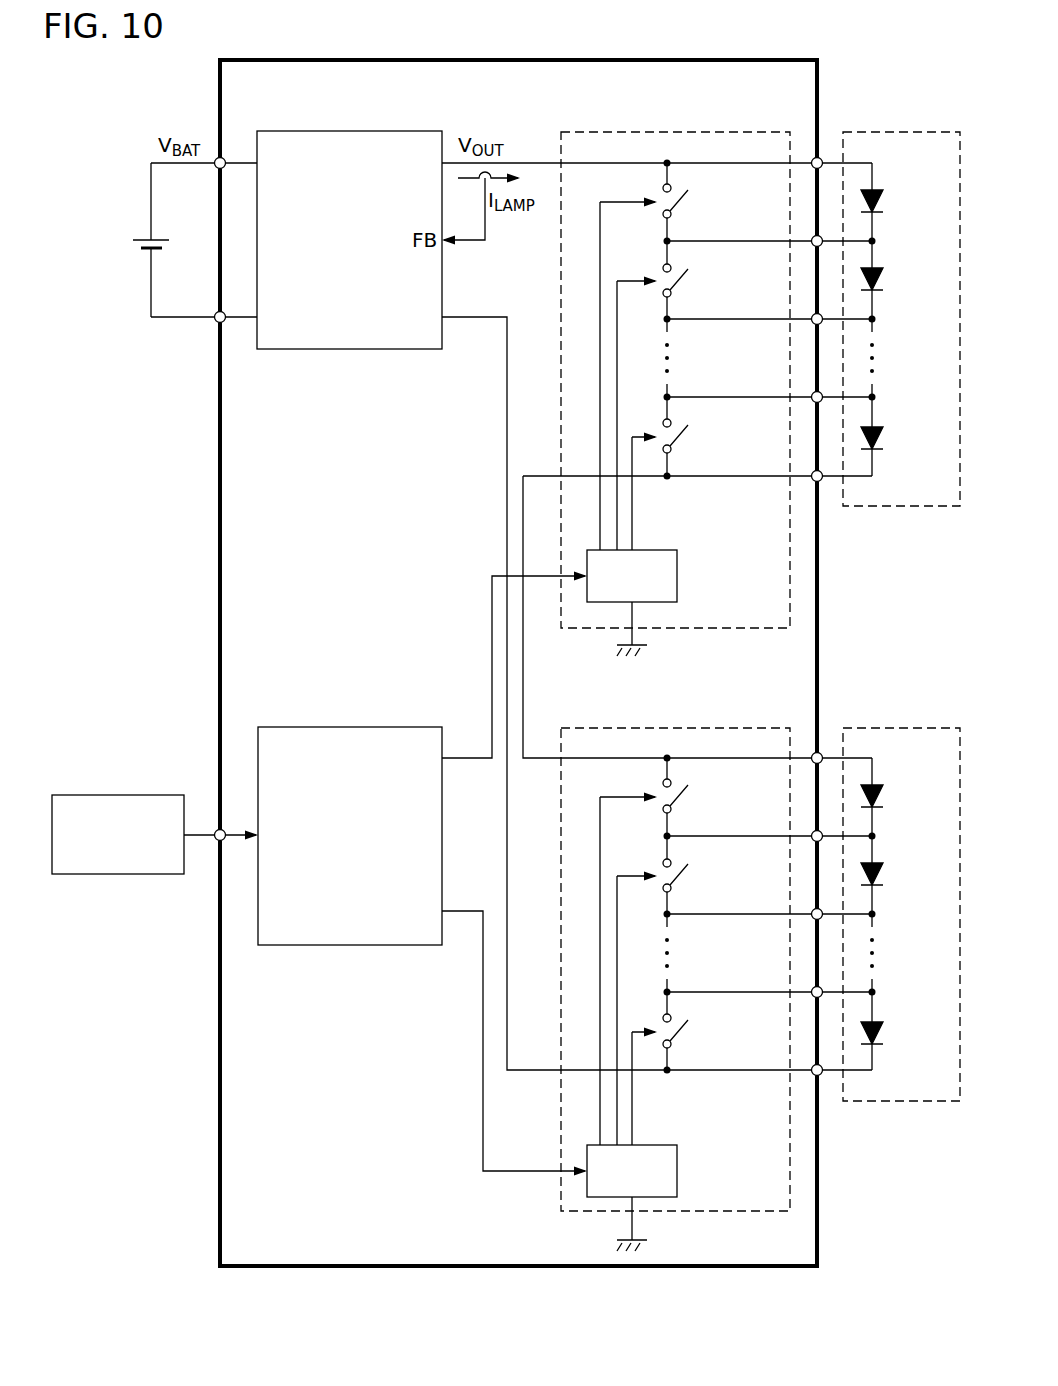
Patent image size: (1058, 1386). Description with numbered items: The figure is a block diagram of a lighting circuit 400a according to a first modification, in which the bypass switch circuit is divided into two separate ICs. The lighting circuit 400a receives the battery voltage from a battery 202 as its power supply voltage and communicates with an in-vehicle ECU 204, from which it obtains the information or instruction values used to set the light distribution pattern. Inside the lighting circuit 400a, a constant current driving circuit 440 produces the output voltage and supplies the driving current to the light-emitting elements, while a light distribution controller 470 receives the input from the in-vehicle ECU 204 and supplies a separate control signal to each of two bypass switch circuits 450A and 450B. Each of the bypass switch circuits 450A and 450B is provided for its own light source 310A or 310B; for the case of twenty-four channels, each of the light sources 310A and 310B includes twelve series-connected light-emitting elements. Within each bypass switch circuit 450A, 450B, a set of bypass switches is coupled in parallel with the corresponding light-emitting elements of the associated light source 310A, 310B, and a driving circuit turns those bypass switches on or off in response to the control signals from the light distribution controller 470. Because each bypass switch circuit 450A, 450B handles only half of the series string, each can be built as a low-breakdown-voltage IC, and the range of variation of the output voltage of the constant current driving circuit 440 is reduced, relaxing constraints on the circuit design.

The lighting circuit 400a is at (507, 1266).
The battery 202 is at (124, 245).
The in-vehicle ECU 204 is at (112, 874).
The constant current driving circuit 440 is at (341, 131).
The light distribution controller 470 is at (355, 945).
The bypass switch circuit 450A is at (700, 132).
The bypass switch circuit 450B is at (700, 727).
The light source 310A is at (900, 132).
The light source 310B is at (900, 727).